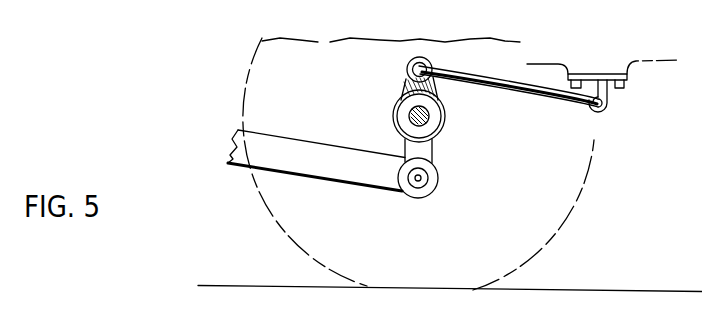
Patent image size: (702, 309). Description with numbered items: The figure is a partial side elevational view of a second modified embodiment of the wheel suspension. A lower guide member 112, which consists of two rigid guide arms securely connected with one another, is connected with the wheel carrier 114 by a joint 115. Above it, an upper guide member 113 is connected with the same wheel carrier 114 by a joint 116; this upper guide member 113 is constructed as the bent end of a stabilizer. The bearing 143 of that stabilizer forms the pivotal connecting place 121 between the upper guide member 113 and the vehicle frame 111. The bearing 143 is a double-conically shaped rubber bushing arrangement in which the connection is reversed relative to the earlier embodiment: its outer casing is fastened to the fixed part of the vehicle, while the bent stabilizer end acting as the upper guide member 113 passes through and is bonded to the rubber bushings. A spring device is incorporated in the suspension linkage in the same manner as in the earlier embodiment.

The vehicle frame 111 is at (606, 71).
The lower guide member 112 is at (355, 194).
The upper guide member 113 is at (515, 91).
The wheel carrier 114 is at (437, 123).
The joint 115 is at (420, 180).
The joint 116 is at (407, 70).
The pivotal connecting place 121 is at (603, 115).
The bearing 143 is at (611, 104).